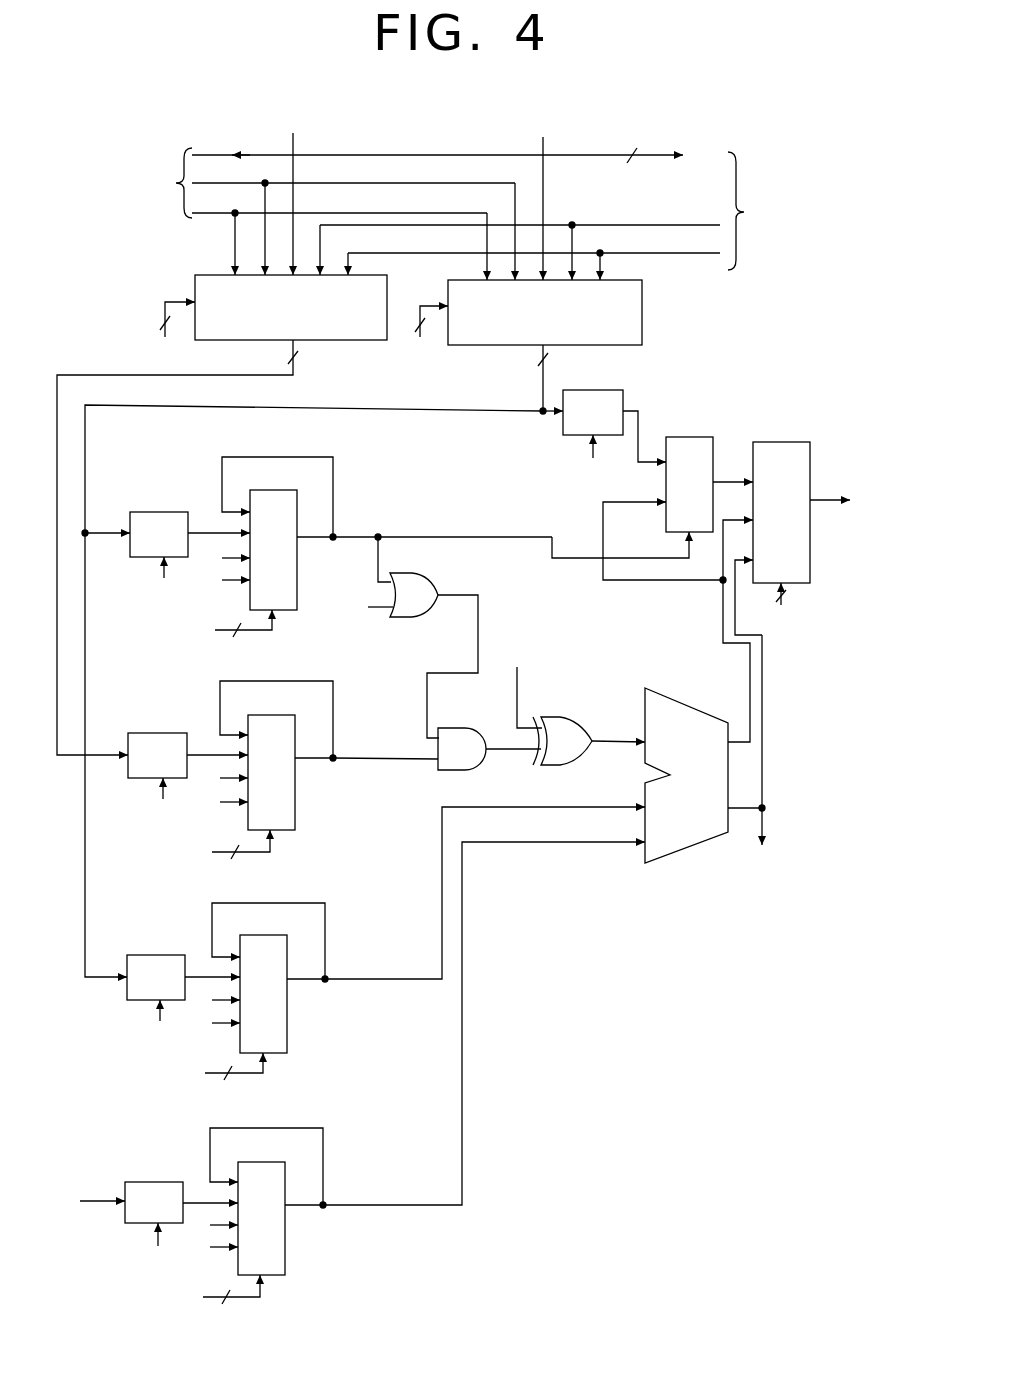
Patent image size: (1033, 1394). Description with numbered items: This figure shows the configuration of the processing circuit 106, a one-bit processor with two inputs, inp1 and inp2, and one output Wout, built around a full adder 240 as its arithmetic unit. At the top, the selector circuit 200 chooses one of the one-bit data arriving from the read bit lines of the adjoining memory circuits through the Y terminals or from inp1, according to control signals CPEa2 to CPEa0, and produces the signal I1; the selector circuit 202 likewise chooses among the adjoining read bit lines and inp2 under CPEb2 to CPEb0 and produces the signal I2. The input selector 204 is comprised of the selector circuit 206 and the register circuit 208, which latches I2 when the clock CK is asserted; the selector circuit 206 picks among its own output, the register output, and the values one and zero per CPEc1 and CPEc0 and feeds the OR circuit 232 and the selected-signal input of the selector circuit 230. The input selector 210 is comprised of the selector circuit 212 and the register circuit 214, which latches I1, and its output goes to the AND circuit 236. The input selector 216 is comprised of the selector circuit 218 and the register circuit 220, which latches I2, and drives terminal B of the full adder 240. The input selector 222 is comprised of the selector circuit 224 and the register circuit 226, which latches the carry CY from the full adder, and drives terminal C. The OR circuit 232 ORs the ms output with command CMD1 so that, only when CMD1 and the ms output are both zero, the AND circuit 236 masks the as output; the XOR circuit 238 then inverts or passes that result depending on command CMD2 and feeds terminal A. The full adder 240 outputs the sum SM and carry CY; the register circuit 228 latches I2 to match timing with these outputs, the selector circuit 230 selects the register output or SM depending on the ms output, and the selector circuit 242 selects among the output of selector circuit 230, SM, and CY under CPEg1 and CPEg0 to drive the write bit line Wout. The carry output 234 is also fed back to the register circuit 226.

The processing circuit 106 is at (530, 1323).
The selector circuit 200 is at (345, 340).
The selector circuit 202 is at (642, 327).
The input selector (ms) 204 is at (318, 534).
The selector circuit (ms1) 206 is at (297, 597).
The register circuit (mr1) 208 is at (135, 557).
The input selector (as) 210 is at (265, 757).
The selector circuit (as1) 212 is at (295, 815).
The register circuit (ar1) 214 is at (133, 778).
The input selector (bs) 216 is at (364, 954).
The selector circuit (bs1) 218 is at (287, 1035).
The register circuit (br1) 220 is at (133, 1000).
The input selector (cs) 222 is at (348, 1084).
The selector circuit (cs1) 224 is at (285, 1258).
The register circuit (cr1) 226 is at (130, 1223).
The register circuit (dr) 228 is at (623, 400).
The selector circuit (ds) 230 is at (713, 440).
The OR circuit (mo3) 232 is at (410, 573).
The carry output 234 is at (712, 870).
The AND circuit (ma1) 236 is at (455, 728).
The XOR circuit (xo2) 238 is at (575, 717).
The full adder 240 is at (650, 690).
The selector circuit (ws) 242 is at (805, 442).